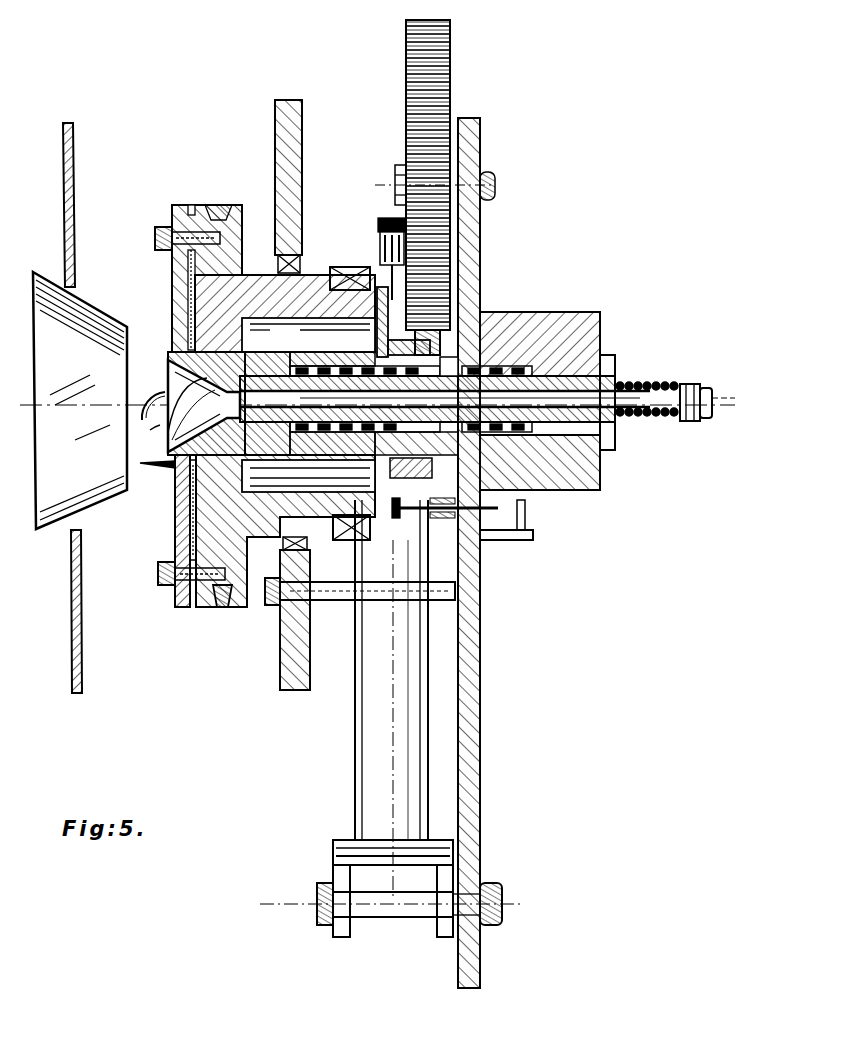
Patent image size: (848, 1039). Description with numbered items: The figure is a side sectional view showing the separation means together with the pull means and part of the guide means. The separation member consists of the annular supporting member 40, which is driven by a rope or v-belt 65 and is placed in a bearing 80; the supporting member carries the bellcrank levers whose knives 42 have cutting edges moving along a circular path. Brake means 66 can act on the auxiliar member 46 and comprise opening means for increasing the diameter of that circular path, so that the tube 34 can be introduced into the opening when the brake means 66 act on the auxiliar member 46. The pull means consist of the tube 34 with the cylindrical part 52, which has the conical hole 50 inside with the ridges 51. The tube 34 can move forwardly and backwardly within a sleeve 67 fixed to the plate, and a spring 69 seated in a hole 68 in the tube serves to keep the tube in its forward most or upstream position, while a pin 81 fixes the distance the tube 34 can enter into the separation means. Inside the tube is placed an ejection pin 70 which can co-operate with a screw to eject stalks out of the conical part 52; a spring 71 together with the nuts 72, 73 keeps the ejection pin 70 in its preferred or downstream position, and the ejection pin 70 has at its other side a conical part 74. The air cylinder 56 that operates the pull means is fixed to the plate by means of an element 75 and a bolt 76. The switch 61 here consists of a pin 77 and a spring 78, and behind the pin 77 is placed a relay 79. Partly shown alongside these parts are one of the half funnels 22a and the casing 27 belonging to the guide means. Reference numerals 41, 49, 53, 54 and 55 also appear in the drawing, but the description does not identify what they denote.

The casing 27 is at (74, 150).
The half funnel 22a is at (80, 300).
The screw 41 is at (162, 210).
The knives 42 is at (200, 232).
The annular supporting member 40 is at (240, 230).
The tube 34 is at (296, 337).
The hole 68 is at (342, 366).
The bearing 80 is at (288, 258).
The brake means 66 is at (350, 267).
The auxiliar member 46 is at (378, 300).
The gear 55 is at (412, 80).
The bushing 54 is at (462, 340).
The switch 61 is at (480, 572).
The ejection pin 70 is at (560, 370).
The spring 69 is at (495, 365).
The sleeve 67 is at (598, 485).
The spring 71 is at (630, 386).
The nut 72 is at (690, 422).
The nut 73 is at (704, 412).
The conical hole 50 is at (170, 360).
The conical part 74 is at (232, 411).
The valve lip 49 is at (150, 396).
The ridges 51 is at (160, 430).
The cylindrical part 52 is at (172, 510).
The rope or v-belt 65 is at (222, 608).
The tube connection 53 is at (358, 545).
The spring 78 is at (398, 520).
The pin 77 is at (450, 520).
The relay 79 is at (525, 545).
The pin 81 is at (358, 645).
The air cylinder 56 is at (358, 762).
The element 75 is at (333, 872).
The bolt 76 is at (395, 918).